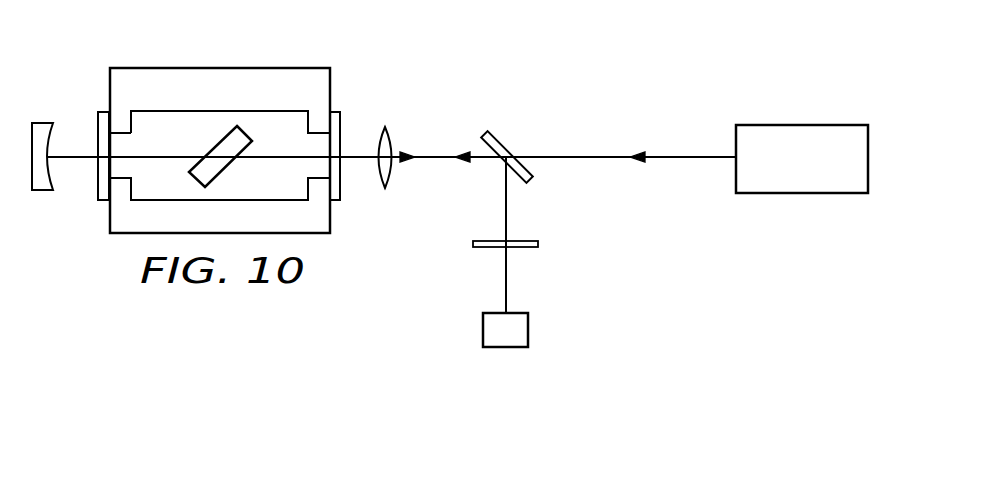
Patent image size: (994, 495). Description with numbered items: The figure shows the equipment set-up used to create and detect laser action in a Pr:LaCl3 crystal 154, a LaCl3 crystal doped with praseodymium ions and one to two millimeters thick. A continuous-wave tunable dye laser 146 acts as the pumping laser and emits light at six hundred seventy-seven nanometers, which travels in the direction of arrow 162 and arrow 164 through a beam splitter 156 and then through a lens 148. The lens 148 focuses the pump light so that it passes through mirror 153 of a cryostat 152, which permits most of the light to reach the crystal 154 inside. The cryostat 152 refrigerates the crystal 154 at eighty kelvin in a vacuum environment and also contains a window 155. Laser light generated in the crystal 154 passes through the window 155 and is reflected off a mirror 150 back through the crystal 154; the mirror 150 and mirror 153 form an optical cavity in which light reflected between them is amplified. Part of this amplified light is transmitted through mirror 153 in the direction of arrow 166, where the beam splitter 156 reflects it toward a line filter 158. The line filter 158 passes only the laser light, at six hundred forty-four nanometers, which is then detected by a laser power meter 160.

The continuous-wave tunable dye laser 146 is at (815, 125).
The lens 148 is at (385, 126).
The mirror 150 is at (43, 121).
The cryostat 152 is at (192, 68).
The mirror 153 is at (350, 212).
The Pr:LaCl3 crystal 154 is at (220, 138).
The window 155 is at (93, 210).
The beam splitter 156 is at (531, 179).
The line filter 158 is at (515, 248).
The laser power meter 160 is at (483, 313).
The arrow 162 is at (637, 153).
The arrow 164 is at (463, 165).
The arrow 166 is at (407, 165).